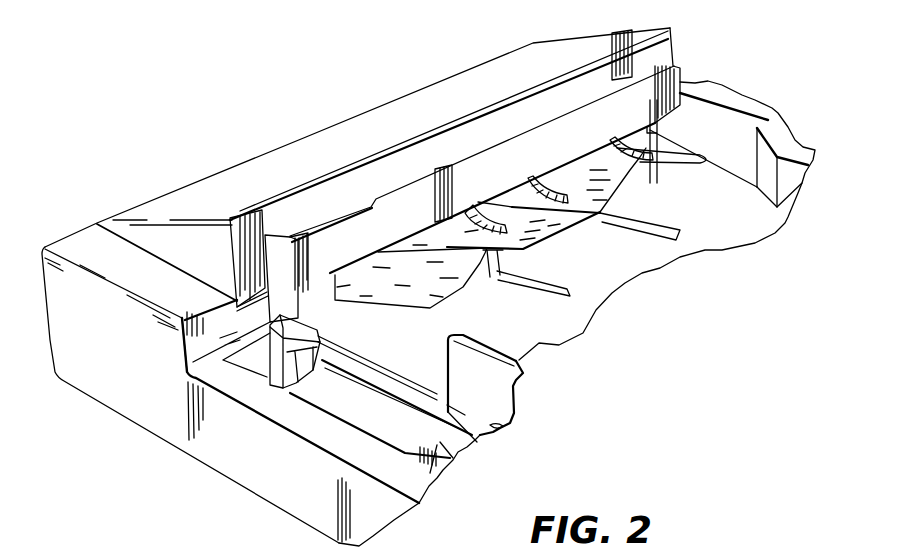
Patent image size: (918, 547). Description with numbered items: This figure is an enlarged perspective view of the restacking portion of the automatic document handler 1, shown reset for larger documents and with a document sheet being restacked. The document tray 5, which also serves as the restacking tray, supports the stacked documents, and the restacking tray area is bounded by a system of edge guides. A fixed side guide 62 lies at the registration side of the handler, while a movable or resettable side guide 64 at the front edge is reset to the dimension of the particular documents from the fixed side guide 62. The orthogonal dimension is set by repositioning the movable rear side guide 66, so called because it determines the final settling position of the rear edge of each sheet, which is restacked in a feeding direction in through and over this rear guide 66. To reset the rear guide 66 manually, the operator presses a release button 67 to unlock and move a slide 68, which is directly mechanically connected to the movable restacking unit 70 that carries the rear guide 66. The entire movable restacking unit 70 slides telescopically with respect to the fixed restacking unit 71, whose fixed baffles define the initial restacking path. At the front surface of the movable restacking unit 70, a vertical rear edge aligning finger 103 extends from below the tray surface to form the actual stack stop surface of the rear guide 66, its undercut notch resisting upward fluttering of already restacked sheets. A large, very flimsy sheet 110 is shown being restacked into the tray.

The automatic document handler 1 is at (307, 104).
The document tray 5 is at (583, 316).
The fixed side guide 62 is at (793, 192).
The resettable side guide 64 is at (520, 363).
The movable rear side guide 66 is at (567, 222).
The release button 67 is at (293, 390).
The slide 68 is at (330, 398).
The movable restacking unit 70 is at (298, 220).
The fixed restacking unit 71 is at (413, 110).
The vertical rear edge aligning finger 103 is at (483, 252).
The large flimsy sheet 110 is at (590, 184).